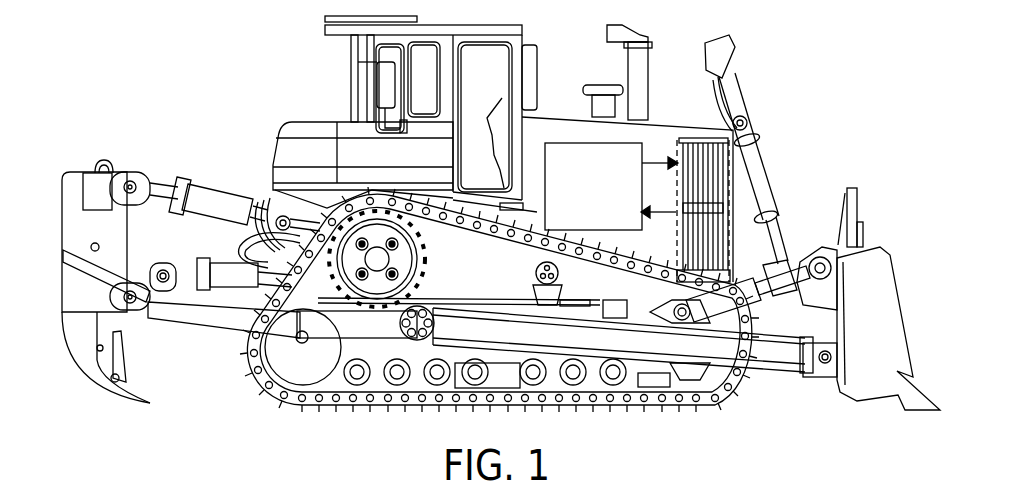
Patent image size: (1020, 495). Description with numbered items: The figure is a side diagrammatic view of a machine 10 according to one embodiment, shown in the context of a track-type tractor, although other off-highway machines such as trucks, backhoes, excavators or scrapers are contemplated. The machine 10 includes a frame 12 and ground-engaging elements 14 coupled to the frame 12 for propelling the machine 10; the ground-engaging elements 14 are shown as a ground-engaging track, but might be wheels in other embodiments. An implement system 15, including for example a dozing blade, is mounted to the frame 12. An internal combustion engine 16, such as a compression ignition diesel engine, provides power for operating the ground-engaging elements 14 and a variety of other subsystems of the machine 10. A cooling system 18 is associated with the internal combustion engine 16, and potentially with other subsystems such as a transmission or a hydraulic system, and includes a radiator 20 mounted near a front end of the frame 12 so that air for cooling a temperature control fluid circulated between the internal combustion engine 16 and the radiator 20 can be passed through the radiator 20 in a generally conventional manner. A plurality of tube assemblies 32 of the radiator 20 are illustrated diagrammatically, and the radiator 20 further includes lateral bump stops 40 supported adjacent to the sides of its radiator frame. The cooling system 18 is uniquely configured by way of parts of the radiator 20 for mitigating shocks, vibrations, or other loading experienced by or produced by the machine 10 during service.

The machine 10 is at (848, 108).
The frame 12 is at (268, 193).
The ground-engaging elements 14 is at (572, 418).
The implement system 15 is at (895, 246).
The internal combustion engine 16 is at (578, 143).
The cooling system 18 is at (662, 140).
The radiator 20 is at (758, 134).
The tube assemblies 32 is at (735, 188).
The lateral bump stop 40 is at (755, 204).